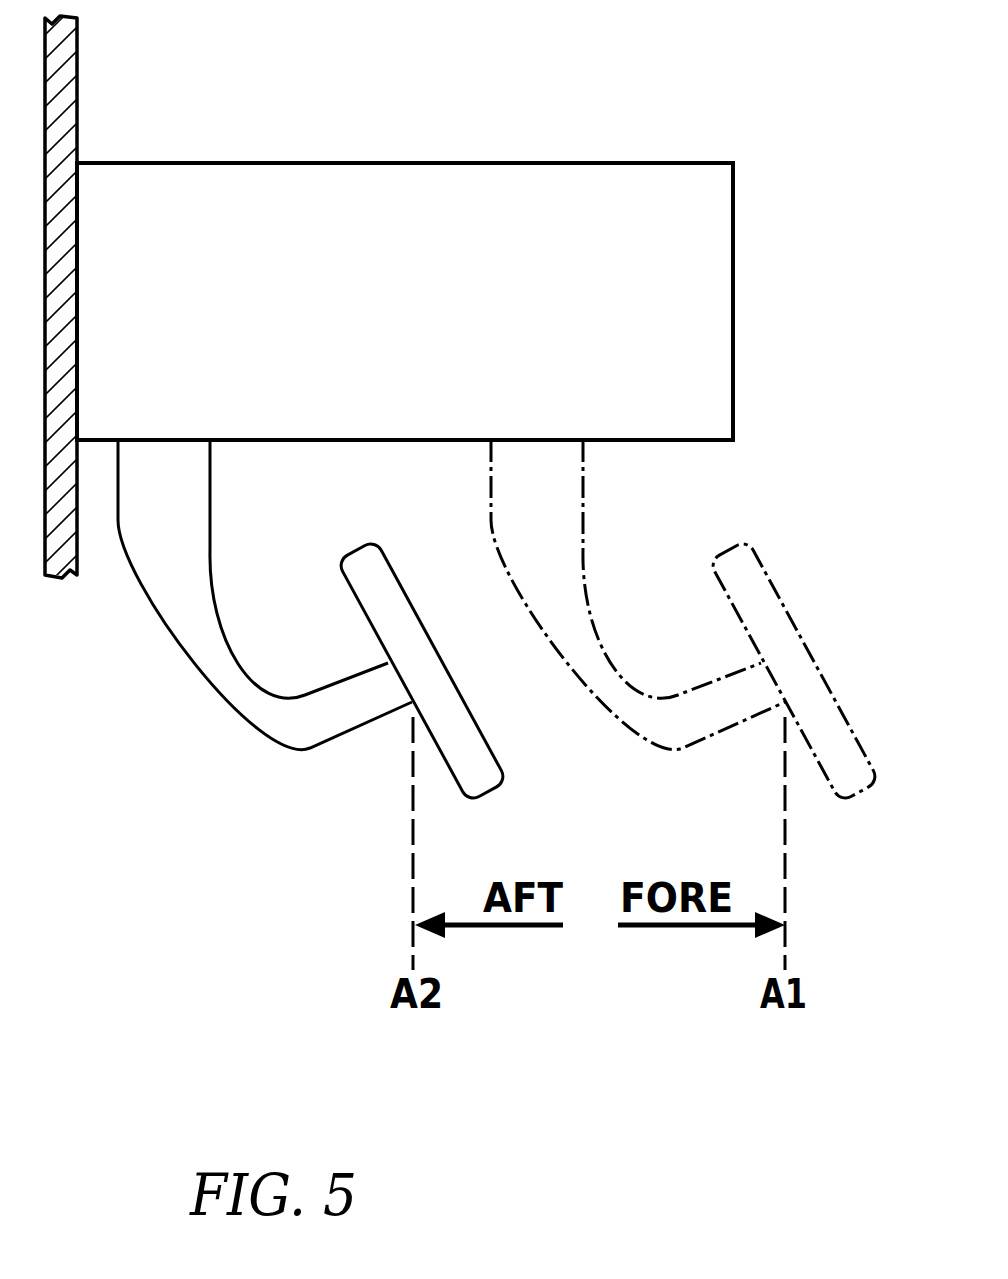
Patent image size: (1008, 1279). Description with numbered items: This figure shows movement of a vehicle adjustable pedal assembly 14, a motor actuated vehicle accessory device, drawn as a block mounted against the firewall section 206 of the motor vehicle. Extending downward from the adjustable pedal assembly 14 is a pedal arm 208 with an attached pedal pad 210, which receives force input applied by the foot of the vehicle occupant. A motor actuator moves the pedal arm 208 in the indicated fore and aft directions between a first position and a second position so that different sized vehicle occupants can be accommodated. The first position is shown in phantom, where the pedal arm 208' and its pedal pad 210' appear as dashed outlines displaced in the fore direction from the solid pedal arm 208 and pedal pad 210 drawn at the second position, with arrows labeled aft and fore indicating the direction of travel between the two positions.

The adjustable pedal assembly 14 is at (758, 283).
The firewall section 206 is at (77, 115).
The pedal arm 208 is at (265, 595).
The pedal pad 210 is at (422, 646).
The pedal arm 208' is at (638, 595).
The pedal pad 210' is at (794, 647).